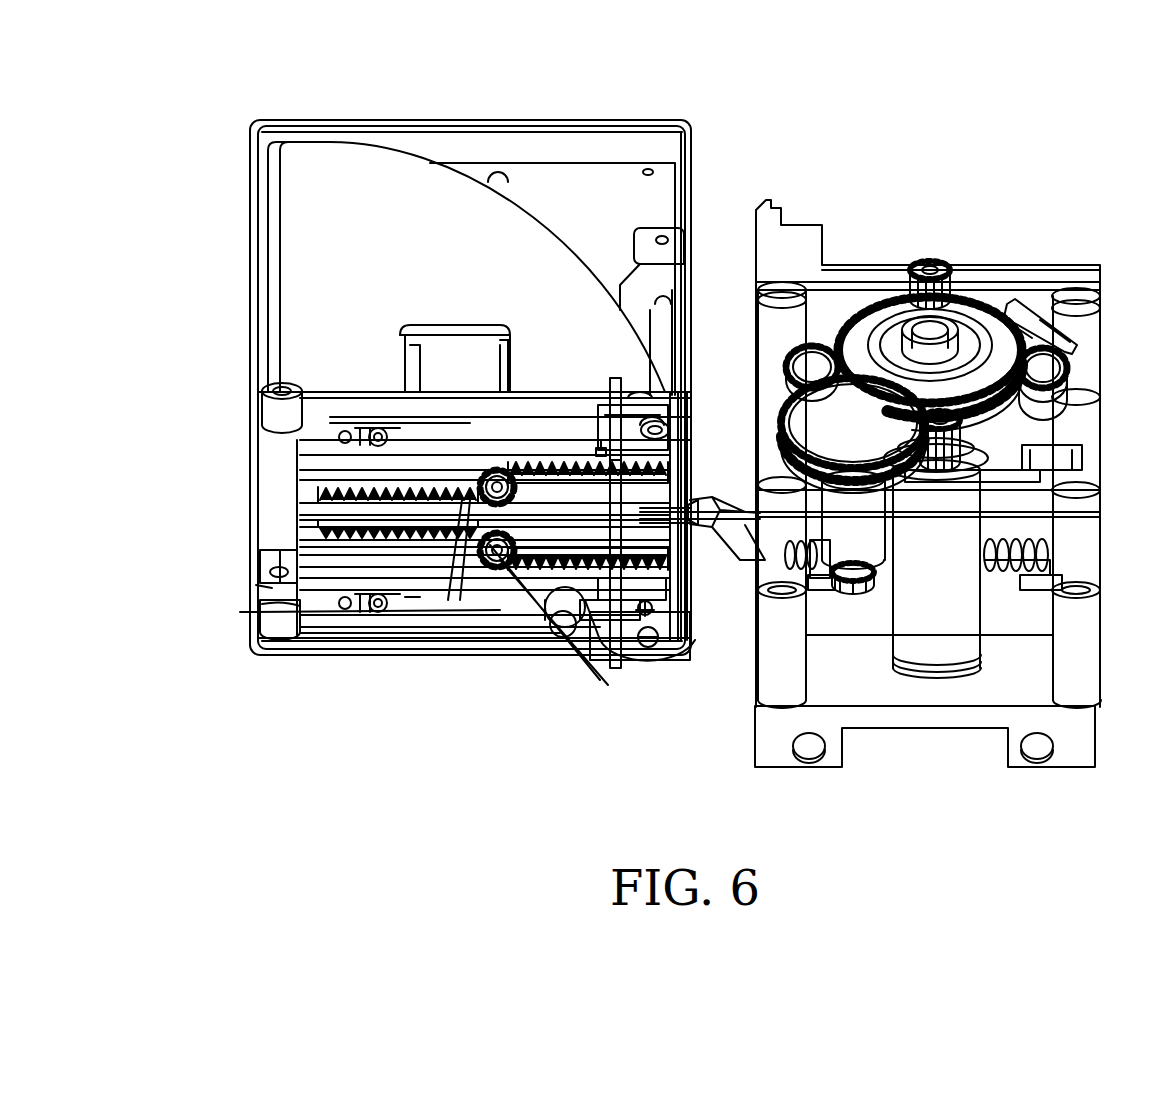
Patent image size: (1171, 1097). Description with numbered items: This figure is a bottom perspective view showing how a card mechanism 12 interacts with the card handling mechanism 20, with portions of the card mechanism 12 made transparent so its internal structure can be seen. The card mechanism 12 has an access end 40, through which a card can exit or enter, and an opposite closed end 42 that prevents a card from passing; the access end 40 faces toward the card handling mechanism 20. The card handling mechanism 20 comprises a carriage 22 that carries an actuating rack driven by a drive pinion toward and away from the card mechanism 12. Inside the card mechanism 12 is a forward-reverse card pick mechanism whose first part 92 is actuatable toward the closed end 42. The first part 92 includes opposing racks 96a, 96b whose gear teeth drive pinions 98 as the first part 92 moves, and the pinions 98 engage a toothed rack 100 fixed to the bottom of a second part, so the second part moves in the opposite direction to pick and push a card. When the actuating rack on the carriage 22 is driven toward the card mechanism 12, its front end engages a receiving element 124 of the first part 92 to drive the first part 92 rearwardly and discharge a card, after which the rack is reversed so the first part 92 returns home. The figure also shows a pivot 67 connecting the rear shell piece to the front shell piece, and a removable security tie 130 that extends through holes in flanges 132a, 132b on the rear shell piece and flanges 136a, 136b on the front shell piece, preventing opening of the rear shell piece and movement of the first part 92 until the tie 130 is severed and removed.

The card mechanism 12 is at (459, 80).
The card handling mechanism 20 is at (916, 782).
The carriage 22 is at (1068, 758).
The access end 40 is at (692, 150).
The closed end 42 is at (252, 272).
The pivot 67 is at (262, 394).
The first part 92 is at (545, 545).
The rack 96a is at (560, 578).
The rack 96b is at (578, 460).
The pinions 98 is at (478, 500).
The toothed rack 100 is at (355, 515).
The receiving element 124 is at (706, 505).
The removable security tie 130 is at (622, 652).
The flange 132a is at (600, 622).
The flange 132b is at (656, 400).
The flange 136a is at (652, 645).
The flange 136b is at (600, 440).